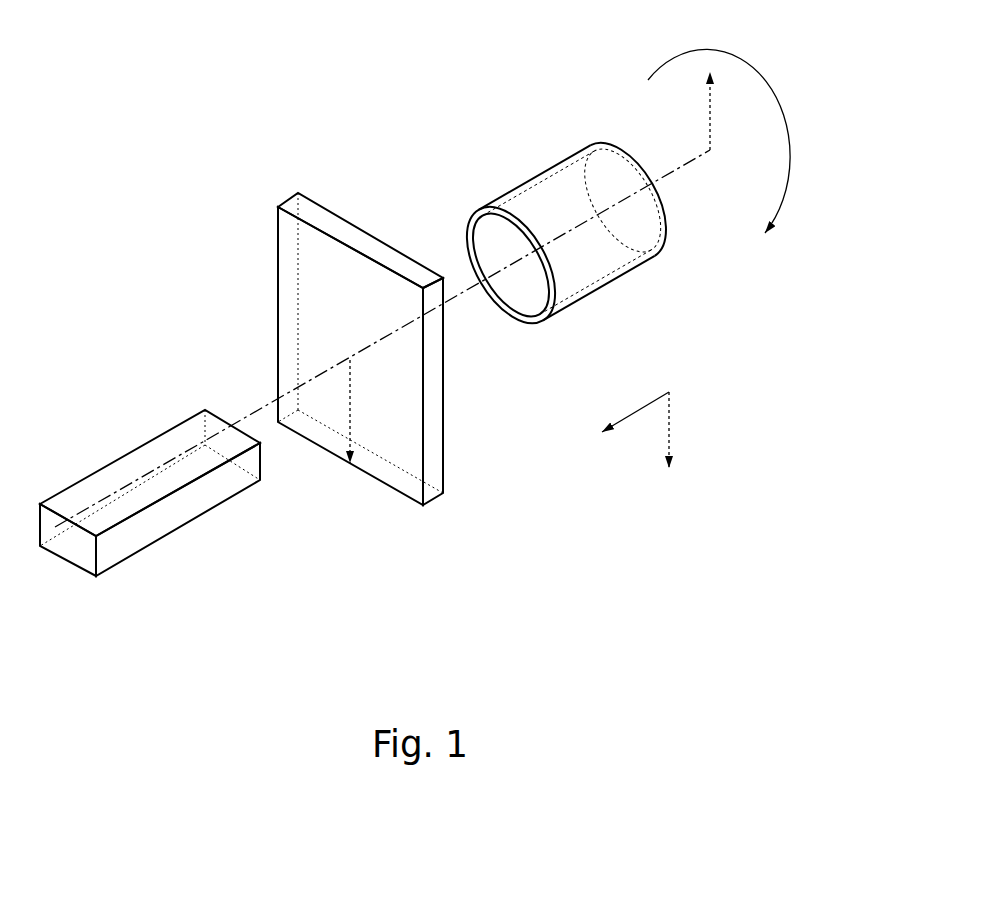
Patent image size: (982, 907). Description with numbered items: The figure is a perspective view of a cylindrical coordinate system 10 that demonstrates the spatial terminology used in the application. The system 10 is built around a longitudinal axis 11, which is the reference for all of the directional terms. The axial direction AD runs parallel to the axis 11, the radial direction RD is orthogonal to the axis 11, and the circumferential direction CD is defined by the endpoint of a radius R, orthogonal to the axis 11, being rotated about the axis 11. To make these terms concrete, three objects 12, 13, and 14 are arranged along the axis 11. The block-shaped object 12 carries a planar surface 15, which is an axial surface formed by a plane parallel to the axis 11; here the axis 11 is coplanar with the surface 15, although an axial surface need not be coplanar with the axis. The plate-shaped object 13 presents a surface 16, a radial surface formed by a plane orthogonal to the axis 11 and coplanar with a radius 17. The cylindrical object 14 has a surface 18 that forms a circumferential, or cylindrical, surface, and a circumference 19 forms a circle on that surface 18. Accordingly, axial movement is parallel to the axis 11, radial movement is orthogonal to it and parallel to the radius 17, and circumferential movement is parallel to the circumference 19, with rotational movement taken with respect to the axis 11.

The cylindrical coordinate system 10 is at (238, 238).
The longitudinal axis 11 is at (652, 177).
The object 12 is at (150, 520).
The object 13 is at (357, 369).
The object 14 is at (529, 242).
The axial surface 15 is at (115, 477).
The radial surface 16 is at (292, 312).
The radius 17 is at (352, 405).
The circumferential surface 18 is at (537, 178).
The circumference 19 is at (470, 233).
The radius R is at (710, 107).
The circumferential direction CD is at (743, 97).
The axial direction AD is at (637, 410).
The radial direction RD is at (670, 428).